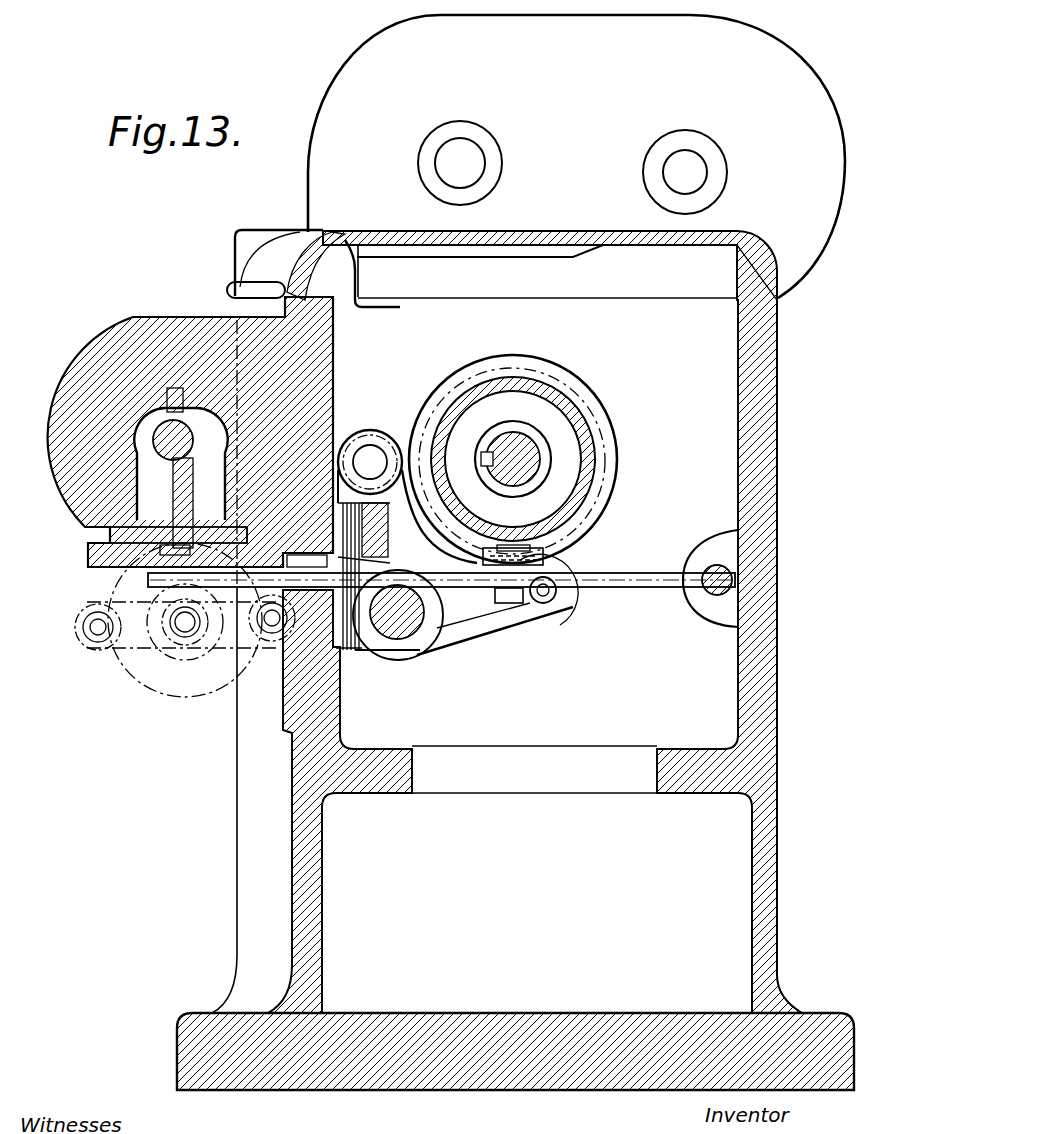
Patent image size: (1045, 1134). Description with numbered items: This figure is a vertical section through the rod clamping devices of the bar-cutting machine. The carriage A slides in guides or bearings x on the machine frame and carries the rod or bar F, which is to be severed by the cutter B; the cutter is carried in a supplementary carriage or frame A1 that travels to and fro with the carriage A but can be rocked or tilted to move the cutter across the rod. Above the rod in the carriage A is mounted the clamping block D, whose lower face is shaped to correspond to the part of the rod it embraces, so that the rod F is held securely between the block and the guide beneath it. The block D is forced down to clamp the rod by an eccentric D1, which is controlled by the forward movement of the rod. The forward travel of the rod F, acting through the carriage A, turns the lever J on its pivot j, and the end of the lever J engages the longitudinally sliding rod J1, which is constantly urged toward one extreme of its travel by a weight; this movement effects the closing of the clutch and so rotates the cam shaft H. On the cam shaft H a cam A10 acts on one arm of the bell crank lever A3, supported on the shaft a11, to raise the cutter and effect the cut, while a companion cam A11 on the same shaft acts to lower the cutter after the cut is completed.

The eccentric D1 is at (163, 407).
The clamping block D is at (150, 495).
The guides or bearings x is at (140, 540).
The rod or bar F is at (105, 553).
The carriage A is at (113, 607).
The supplementary carriage or frame A1 is at (130, 640).
The cutter B is at (172, 695).
The cam A10 is at (552, 340).
The companion cam A11 is at (604, 487).
The cam shaft H is at (545, 433).
The bell crank lever A3 is at (403, 445).
The lever J is at (603, 588).
The longitudinally sliding rod J1 is at (708, 594).
The pivot j is at (343, 663).
The shaft a11 is at (507, 633).